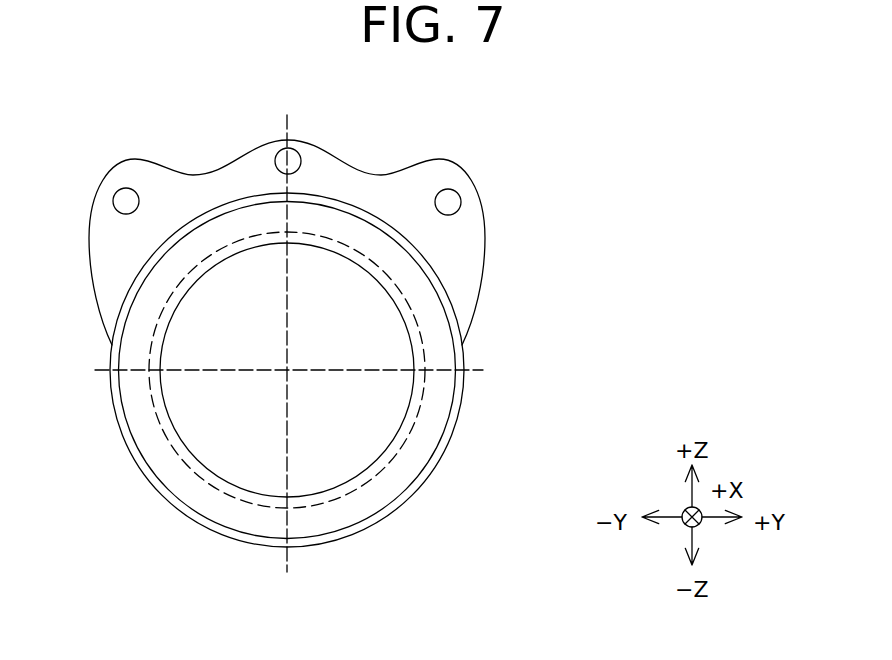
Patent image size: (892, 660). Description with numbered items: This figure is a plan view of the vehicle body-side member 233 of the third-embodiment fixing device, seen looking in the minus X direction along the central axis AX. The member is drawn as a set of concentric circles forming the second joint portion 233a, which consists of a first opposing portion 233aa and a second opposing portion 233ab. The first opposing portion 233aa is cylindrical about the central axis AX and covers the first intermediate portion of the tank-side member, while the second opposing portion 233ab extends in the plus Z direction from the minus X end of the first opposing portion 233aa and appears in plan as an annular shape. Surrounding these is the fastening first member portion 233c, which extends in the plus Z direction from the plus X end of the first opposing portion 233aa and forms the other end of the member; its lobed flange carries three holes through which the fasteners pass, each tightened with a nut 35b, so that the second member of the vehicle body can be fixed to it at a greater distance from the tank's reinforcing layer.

The vehicle body-side member 233 is at (652, 195).
The second joint portion 233a is at (422, 370).
The first opposing portion 233aa is at (427, 336).
The second opposing portion 233ab is at (443, 360).
The fastening first member portion 233c is at (457, 281).
The nut 35b is at (126, 201).
The central axis AX is at (288, 370).